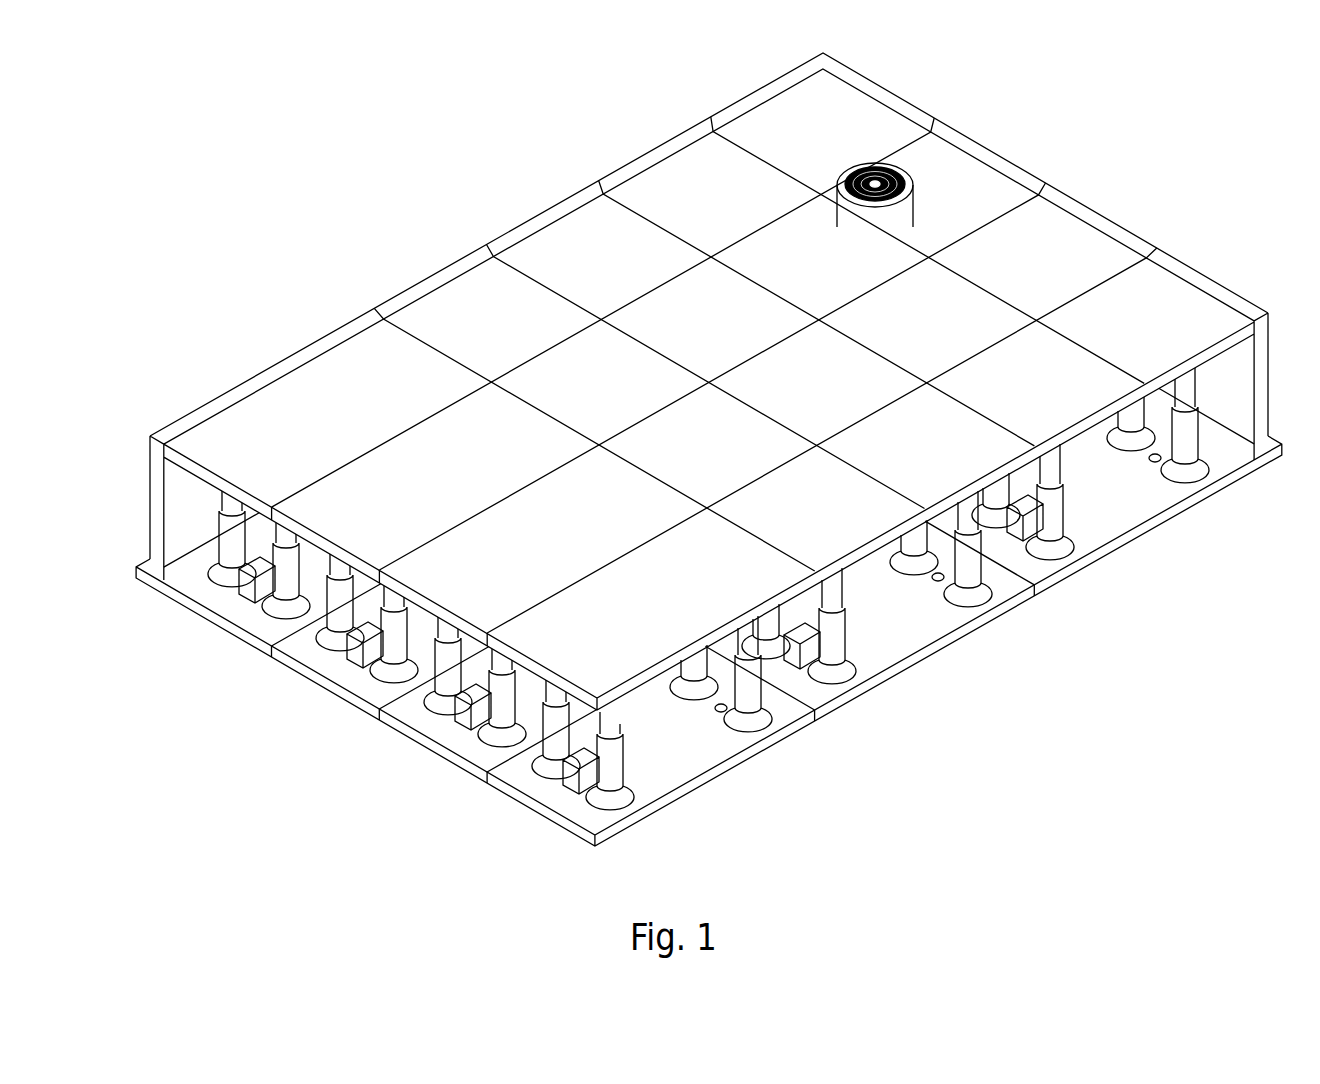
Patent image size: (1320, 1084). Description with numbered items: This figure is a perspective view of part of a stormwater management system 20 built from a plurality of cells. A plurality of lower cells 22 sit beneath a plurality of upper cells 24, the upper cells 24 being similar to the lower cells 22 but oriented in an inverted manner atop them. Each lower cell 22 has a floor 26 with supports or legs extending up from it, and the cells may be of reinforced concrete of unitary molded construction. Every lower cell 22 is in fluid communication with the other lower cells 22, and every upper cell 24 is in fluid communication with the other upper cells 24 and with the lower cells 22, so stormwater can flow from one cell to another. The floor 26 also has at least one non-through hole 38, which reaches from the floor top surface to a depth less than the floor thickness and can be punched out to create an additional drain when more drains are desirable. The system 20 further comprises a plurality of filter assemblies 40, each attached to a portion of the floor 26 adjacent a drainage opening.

The stormwater management system 20 is at (290, 93).
The lower cells 22 is at (176, 598).
The upper cells 24 is at (547, 623).
The floor 26 is at (694, 774).
The non-through hole 38 is at (724, 714).
The filter assembly 40 is at (247, 587).